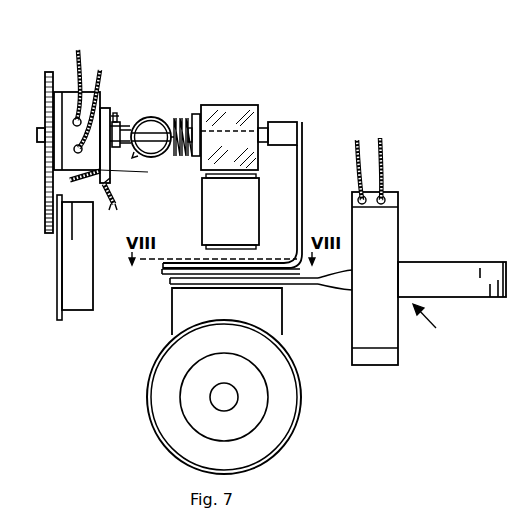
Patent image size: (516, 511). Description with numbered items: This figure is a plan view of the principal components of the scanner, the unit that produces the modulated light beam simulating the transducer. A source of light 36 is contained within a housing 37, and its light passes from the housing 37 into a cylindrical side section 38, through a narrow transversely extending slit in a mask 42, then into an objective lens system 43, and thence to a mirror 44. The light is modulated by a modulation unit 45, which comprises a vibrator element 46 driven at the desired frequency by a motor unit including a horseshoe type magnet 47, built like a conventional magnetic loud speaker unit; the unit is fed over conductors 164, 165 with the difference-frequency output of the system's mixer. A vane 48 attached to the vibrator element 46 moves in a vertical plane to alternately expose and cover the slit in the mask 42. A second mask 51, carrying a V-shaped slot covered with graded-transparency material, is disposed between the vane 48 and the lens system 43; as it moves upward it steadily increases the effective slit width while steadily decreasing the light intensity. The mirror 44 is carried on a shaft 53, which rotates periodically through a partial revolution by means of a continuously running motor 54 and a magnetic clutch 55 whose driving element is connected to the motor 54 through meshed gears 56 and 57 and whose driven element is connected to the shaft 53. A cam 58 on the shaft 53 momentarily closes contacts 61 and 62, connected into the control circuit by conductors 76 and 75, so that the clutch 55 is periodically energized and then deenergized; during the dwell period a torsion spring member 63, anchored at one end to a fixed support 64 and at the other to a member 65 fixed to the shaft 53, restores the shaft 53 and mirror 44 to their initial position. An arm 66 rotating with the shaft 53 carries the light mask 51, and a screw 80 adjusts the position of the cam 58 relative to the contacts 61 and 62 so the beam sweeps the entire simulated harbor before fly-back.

The source of light 36 is at (181, 407).
The housing 37 is at (298, 426).
The cylindrical side section 38 is at (282, 315).
The mask 42 is at (280, 290).
The objective lens system 43 is at (202, 206).
The mirror 44 is at (242, 110).
The modulation unit 45 is at (435, 325).
The vibrator element 46 is at (313, 287).
The horseshoe type magnet 47 is at (435, 262).
The vane 48 is at (170, 283).
The second mask 51 is at (160, 272).
The shaft 53 is at (126, 127).
The motor 54 is at (77, 310).
The magnetic clutch 55 is at (65, 95).
The gear 56 is at (47, 228).
The gear 57 is at (47, 100).
The cam 58 is at (106, 108).
The contact 61 is at (135, 173).
The contact 62 is at (110, 181).
The torsion spring member 63 is at (177, 114).
The fixed support 64 is at (152, 117).
The member 65 is at (199, 108).
The arm 66 is at (303, 186).
The conductor 75 is at (114, 209).
The conductor 76 is at (90, 178).
The screw 80 is at (114, 113).
The conductor 164 is at (357, 156).
The conductor 165 is at (383, 148).